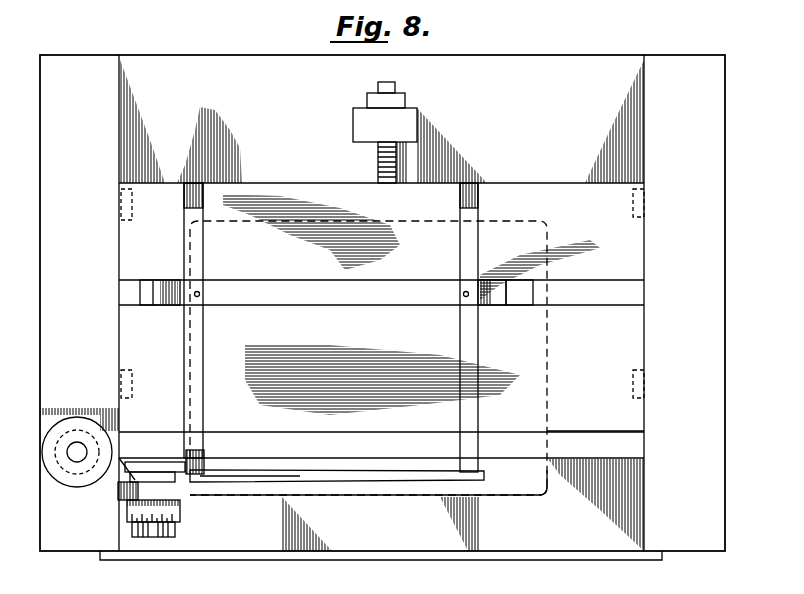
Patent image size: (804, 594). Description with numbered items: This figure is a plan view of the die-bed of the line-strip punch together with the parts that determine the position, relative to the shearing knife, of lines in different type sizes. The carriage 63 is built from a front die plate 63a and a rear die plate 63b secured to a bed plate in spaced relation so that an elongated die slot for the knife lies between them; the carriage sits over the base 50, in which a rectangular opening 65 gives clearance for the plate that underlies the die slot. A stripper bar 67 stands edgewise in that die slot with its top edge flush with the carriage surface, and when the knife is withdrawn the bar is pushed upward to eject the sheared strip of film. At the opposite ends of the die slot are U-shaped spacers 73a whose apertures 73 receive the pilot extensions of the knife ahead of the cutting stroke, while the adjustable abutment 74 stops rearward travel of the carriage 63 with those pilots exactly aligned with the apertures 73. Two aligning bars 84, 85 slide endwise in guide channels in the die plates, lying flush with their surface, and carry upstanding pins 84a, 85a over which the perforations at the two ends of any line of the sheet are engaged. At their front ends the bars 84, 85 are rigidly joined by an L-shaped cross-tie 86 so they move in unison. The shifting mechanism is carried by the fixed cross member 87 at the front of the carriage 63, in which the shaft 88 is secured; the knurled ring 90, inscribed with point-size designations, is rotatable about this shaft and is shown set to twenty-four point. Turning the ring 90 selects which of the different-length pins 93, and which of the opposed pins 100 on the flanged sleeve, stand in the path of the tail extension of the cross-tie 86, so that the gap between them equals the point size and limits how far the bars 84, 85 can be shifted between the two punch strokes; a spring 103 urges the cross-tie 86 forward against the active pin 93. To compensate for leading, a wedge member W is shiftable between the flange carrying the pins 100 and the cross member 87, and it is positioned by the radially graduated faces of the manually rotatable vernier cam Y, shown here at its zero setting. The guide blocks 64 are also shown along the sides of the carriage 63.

The base 50 is at (588, 552).
The carriage 63 is at (305, 176).
The front die plate 63a is at (640, 417).
The rear die plate 63b is at (553, 198).
The guide blocks 64 is at (121, 200).
The rectangular opening 65 is at (503, 487).
The stripper bar 67 is at (353, 303).
The apertures 73 is at (166, 300).
The U-shaped spacers 73a is at (520, 305).
The abutment 74 is at (378, 165).
The aligning bar 84 is at (203, 257).
The upstanding pin 84a is at (200, 295).
The aligning bar 85 is at (460, 256).
The upstanding pin 85a is at (464, 295).
The L-shaped cross-tie 86 is at (375, 485).
The fixed cross member 87 is at (636, 452).
The shaft 88 is at (175, 530).
The knurled ring 90 is at (180, 512).
The pins 93 is at (118, 500).
The pins 100 is at (128, 485).
The spring 103 is at (200, 462).
The vernier cam Y is at (42, 449).
The wedge member W is at (110, 488).